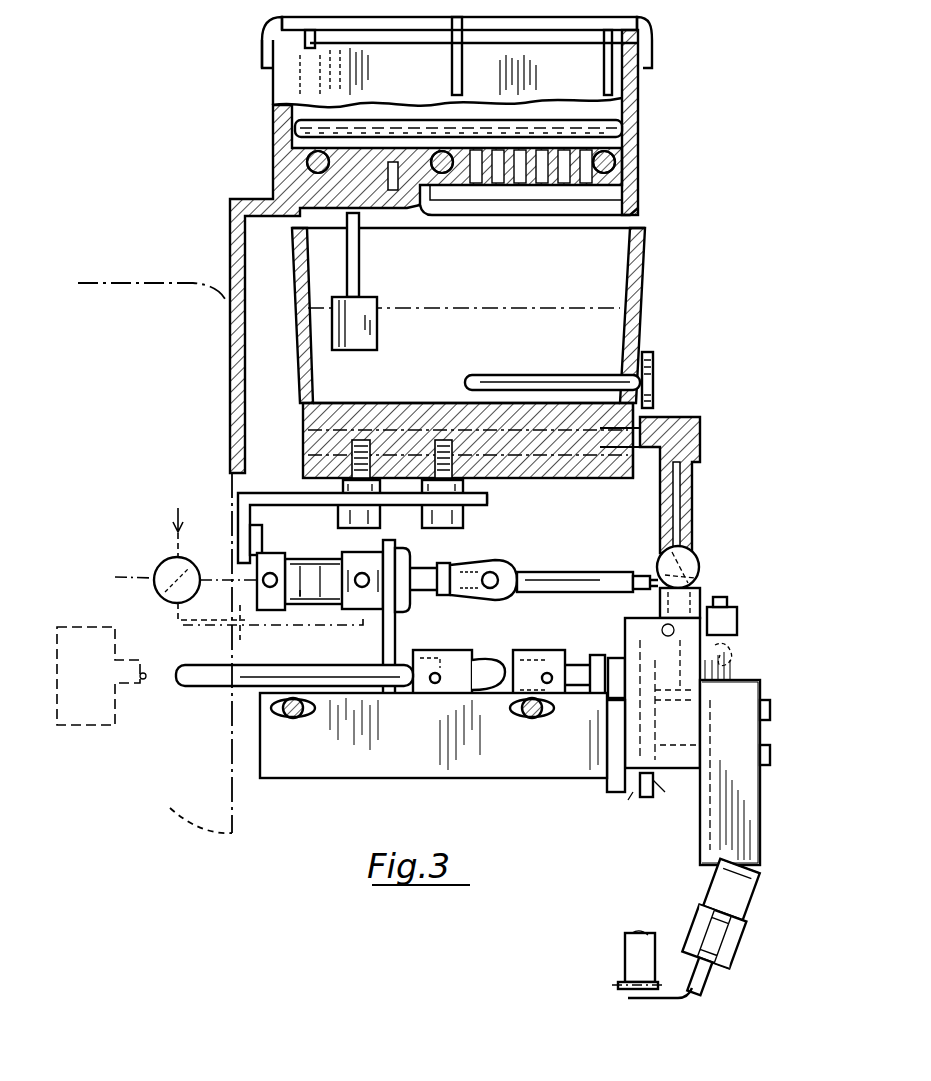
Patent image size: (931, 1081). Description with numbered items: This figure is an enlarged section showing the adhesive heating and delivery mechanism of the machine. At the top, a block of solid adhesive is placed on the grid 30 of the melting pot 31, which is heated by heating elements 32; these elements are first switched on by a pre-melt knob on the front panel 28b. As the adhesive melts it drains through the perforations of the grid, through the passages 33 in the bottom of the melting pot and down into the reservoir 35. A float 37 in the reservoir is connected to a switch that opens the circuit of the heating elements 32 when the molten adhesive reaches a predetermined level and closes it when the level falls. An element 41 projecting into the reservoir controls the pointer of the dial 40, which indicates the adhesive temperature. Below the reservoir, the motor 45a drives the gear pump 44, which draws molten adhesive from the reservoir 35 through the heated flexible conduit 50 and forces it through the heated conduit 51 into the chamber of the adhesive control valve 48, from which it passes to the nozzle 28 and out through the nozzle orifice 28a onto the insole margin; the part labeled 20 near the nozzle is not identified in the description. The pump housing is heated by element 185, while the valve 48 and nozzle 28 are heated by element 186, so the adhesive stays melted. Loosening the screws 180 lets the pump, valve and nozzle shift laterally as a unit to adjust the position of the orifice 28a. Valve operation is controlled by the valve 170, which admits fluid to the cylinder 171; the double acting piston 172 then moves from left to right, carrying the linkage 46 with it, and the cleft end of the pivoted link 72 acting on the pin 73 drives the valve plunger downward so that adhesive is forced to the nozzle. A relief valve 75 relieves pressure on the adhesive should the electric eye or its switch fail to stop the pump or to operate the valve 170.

The melting pot 31 is at (640, 103).
The grid 30 is at (622, 130).
The heating elements 32 is at (305, 163).
The passages 33 is at (583, 185).
The reservoir 35 is at (643, 275).
The float 37 is at (378, 317).
The element 41 is at (542, 375).
The dial 40 is at (654, 366).
The heated flexible conduit 50 is at (695, 520).
The pivoted link 72 is at (702, 577).
The relief valve 75 is at (740, 623).
The pin 73 is at (735, 655).
The gear pump 44 is at (762, 688).
The linkage 46 is at (595, 575).
The cylinder 171 is at (280, 547).
The piston 172 is at (298, 595).
The valve 170 is at (157, 590).
The motor 45a is at (95, 725).
The screws 180 is at (297, 718).
The heated conduit 51 is at (705, 762).
The adhesive control valve 48 is at (740, 918).
The heating element 185 is at (636, 792).
The heating element 186 is at (705, 870).
The workpiece 20 is at (625, 960).
The nozzle orifice 28a is at (625, 990).
The nozzle 28 is at (697, 995).
The front panel 28b is at (234, 830).